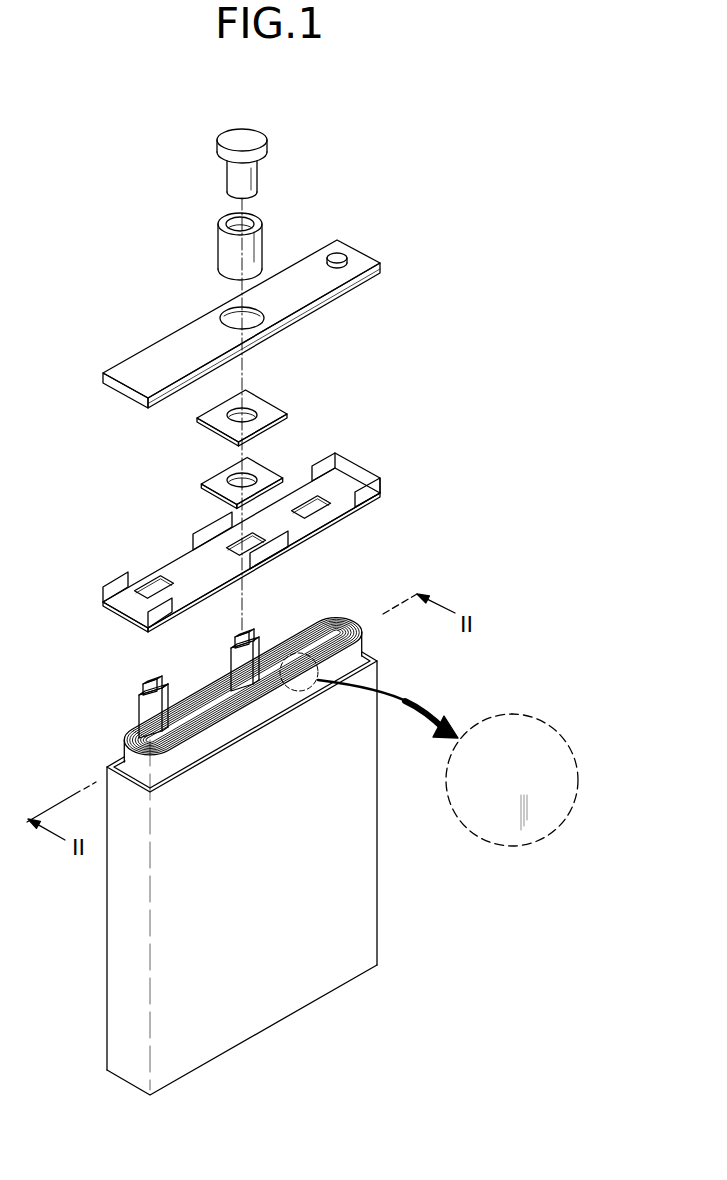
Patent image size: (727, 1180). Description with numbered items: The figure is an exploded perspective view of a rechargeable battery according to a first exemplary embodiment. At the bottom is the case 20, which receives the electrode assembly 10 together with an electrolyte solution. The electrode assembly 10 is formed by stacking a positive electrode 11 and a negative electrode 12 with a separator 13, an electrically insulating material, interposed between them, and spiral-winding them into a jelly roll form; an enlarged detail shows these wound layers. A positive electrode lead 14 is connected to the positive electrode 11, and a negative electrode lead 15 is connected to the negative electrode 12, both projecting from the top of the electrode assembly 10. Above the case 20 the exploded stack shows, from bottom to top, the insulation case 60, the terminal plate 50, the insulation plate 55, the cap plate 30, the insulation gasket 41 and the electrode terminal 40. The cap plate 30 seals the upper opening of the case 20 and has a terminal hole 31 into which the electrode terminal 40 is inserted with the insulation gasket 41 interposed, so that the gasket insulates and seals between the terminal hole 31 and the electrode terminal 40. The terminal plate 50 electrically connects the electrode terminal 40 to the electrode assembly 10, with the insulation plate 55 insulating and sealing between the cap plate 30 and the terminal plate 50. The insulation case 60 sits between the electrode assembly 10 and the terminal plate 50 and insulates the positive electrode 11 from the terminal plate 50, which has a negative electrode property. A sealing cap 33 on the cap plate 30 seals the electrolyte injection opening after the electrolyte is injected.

The electrode assembly 10 is at (338, 617).
The positive electrode 11 is at (557, 730).
The negative electrode 12 is at (565, 753).
The separator 13 is at (467, 828).
The positive electrode lead 14 is at (140, 675).
The negative electrode lead 15 is at (248, 640).
The case 20 is at (263, 1008).
The cap plate 30 is at (133, 366).
The terminal hole 31 is at (224, 312).
The sealing cap 33 is at (337, 255).
The electrode terminal 40 is at (253, 141).
The insulation gasket 41 is at (228, 252).
The terminal plate 50 is at (262, 470).
The insulation plate 55 is at (268, 403).
The insulation case 60 is at (343, 483).